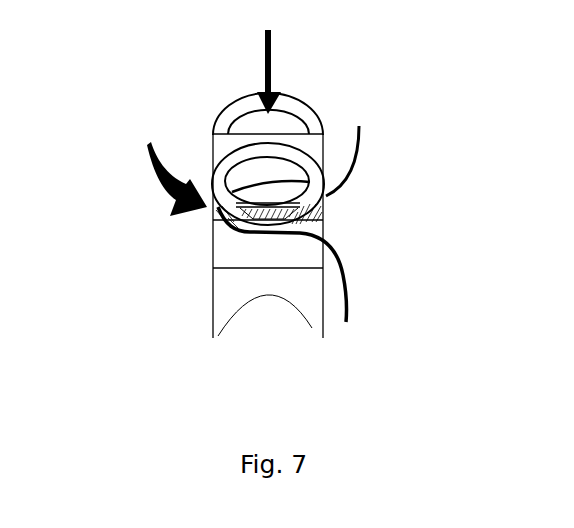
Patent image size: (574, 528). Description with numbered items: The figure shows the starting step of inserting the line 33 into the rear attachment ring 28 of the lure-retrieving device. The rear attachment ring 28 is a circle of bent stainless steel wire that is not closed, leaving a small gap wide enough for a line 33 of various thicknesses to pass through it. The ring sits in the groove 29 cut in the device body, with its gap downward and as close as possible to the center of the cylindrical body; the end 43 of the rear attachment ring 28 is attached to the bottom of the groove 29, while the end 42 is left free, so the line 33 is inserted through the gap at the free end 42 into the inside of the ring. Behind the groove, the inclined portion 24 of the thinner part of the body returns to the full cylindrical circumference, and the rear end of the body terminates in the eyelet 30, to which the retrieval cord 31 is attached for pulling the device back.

The inclined portion 24 is at (265, 328).
The rear attachment ring 28 is at (238, 153).
The groove 29 is at (255, 236).
The eyelet 30 is at (305, 104).
The retrieval cord 31 is at (264, 88).
The line 33 is at (350, 296).
The free end of rear attachment ring 42 is at (250, 208).
The attached end of rear attachment ring 43 is at (295, 206).